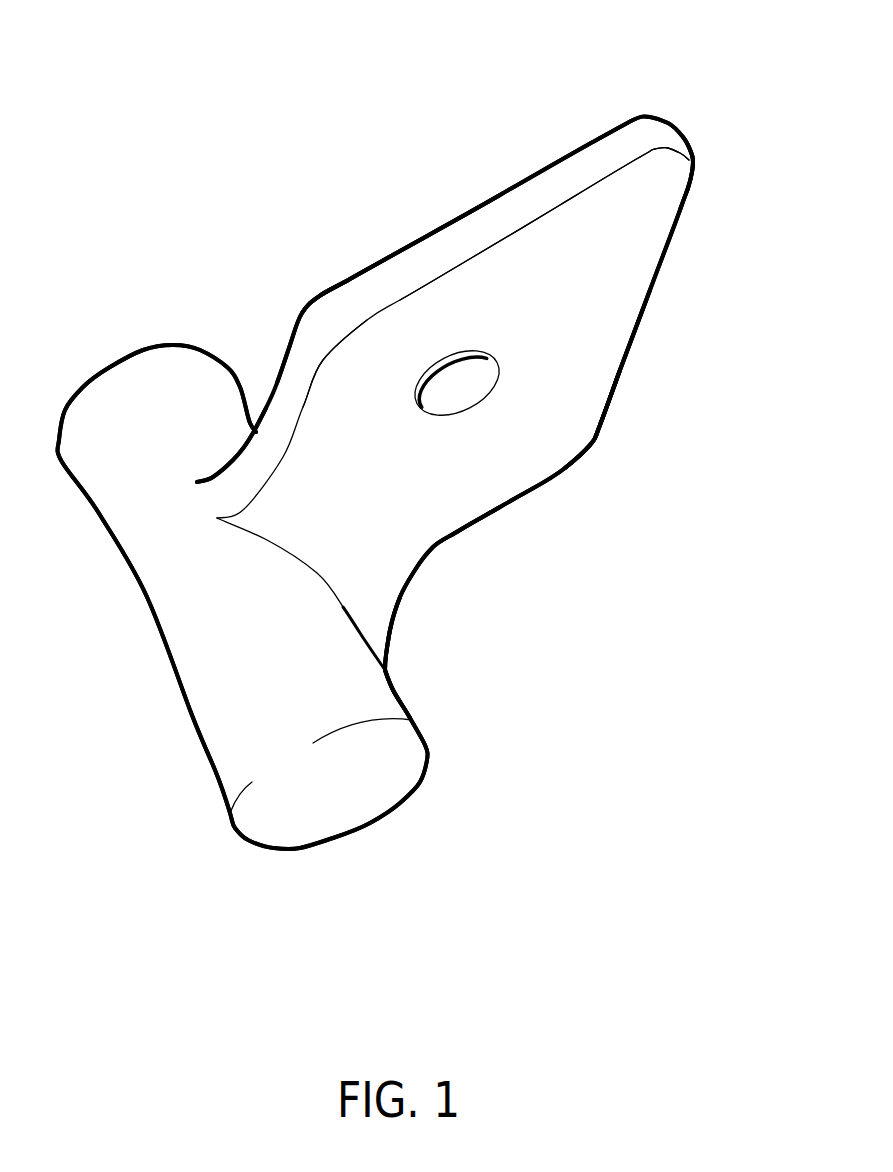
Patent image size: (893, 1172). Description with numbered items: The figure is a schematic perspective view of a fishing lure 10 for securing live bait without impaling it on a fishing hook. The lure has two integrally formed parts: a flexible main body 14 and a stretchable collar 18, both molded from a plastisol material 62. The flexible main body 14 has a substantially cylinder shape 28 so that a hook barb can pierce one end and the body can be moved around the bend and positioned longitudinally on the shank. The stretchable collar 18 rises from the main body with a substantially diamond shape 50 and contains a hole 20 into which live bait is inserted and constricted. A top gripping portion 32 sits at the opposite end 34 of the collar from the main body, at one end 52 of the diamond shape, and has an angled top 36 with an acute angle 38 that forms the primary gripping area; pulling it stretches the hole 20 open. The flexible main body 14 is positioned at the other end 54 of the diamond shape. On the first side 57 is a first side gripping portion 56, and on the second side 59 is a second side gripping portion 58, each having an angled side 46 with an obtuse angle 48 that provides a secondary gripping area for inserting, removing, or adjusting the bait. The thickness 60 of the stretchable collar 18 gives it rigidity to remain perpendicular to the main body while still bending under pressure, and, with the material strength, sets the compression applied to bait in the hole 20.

The fishing lure 10 is at (728, 232).
The flexible main body 14 is at (260, 715).
The stretchable collar 18 is at (547, 487).
The hole 20 is at (497, 373).
The substantially cylinder shape 28 is at (85, 347).
The top gripping portion 32 is at (675, 273).
The opposite end 34 is at (403, 668).
The angled top 36 is at (682, 118).
The acute angle 38 is at (677, 195).
The angled side 46 is at (282, 288).
The obtuse angle 48 is at (317, 380).
The substantially diamond shape 50 is at (438, 183).
The one end 52 is at (700, 155).
The other end 54 is at (425, 595).
The first side gripping portion 56 is at (367, 243).
The first side 57 is at (292, 365).
The second side gripping portion 58 is at (647, 352).
The second side 59 is at (590, 447).
The thickness 60 is at (553, 200).
The plastisol material 62 is at (148, 523).